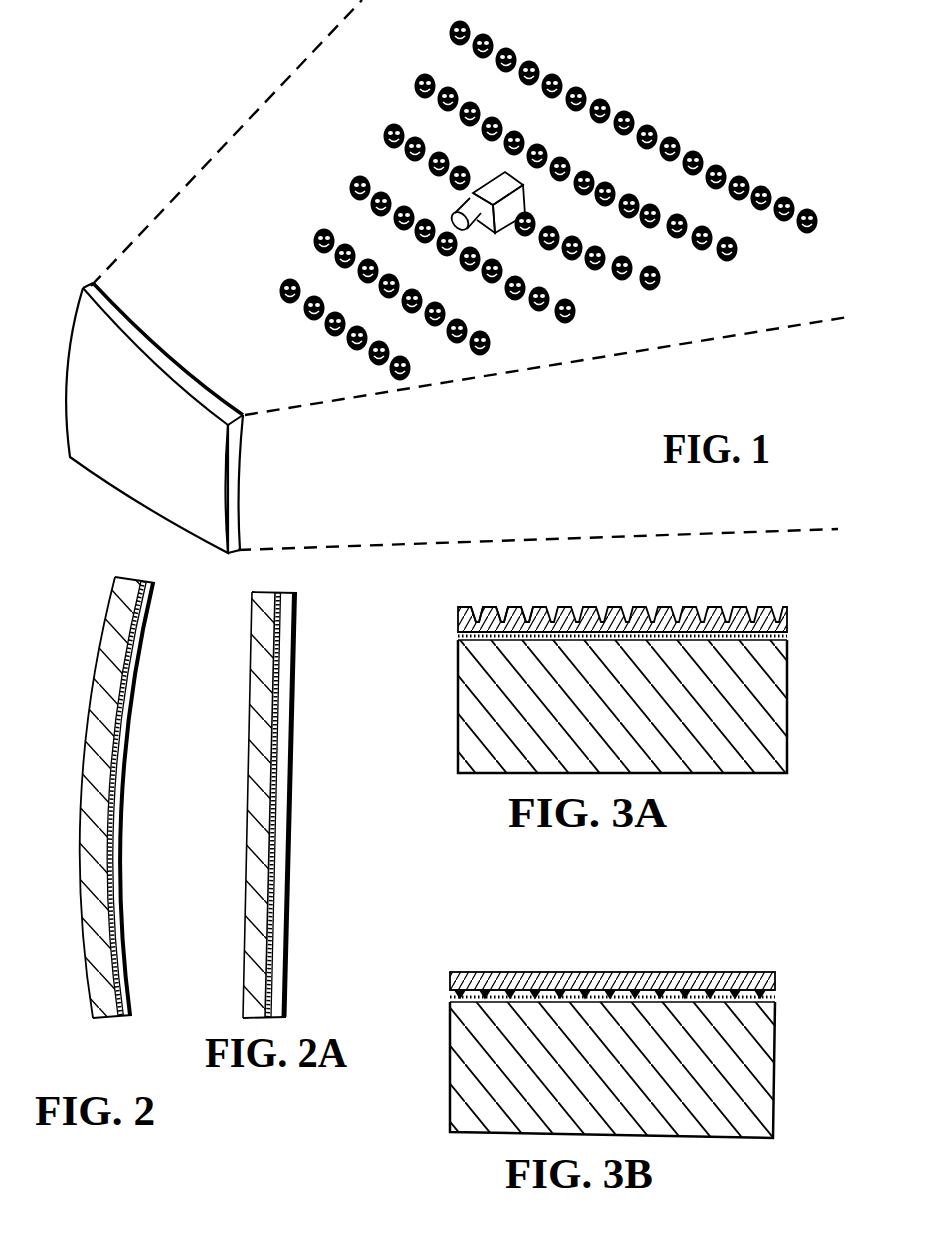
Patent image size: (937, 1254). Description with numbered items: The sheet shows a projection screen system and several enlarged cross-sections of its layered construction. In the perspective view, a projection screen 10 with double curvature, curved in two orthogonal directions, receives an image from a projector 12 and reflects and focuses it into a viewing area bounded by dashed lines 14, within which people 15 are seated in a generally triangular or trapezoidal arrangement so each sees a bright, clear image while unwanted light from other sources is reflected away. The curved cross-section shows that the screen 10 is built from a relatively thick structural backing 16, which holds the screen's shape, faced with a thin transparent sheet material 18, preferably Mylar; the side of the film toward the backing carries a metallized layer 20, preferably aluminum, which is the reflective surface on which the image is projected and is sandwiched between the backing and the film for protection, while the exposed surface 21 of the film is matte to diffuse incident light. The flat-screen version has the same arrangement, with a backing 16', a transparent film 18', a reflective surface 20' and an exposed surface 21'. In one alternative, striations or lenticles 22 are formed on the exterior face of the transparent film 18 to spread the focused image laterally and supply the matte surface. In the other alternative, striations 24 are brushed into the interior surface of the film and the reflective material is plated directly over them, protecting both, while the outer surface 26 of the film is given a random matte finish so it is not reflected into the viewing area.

In FIG. 1, the projection screen 10 is at (170, 368).
In FIG. 2, the projection screen 10 is at (125, 1033).
In FIG. 1, the projector 12 is at (527, 195).
In FIG. 1, the dashed lines 14 is at (242, 127).
In FIG. 1, the people 15 is at (781, 221).
In FIG. 2, the structural backing 16 is at (88, 797).
In FIG. 3A, the structural backing 16 is at (598, 706).
In FIG. 3B, the structural backing 16 is at (587, 1070).
In FIG. 2, the transparent sheet material 18 is at (146, 799).
In FIG. 3A, the transparent sheet material 18 is at (622, 605).
In FIG. 3B, the transparent sheet material 18 is at (612, 959).
In FIG. 2, the metallized layer 20 is at (139, 798).
In FIG. 3A, the metallized layer 20 is at (599, 641).
In FIG. 3B, the metallized layer 20 is at (588, 997).
In FIG. 2, the exposed surface 21 is at (130, 797).
In FIG. 3A, the striations 22 is at (526, 607).
In FIG. 3B, the striations 24 is at (543, 972).
In FIG. 3B, the outer surface 26 is at (608, 973).
In FIG. 2A, the backing 16' is at (241, 805).
In FIG. 2A, the transparent film 18' is at (301, 805).
In FIG. 2A, the reflective surface 20' is at (295, 790).
In FIG. 2A, the exposed surface 21' is at (290, 805).